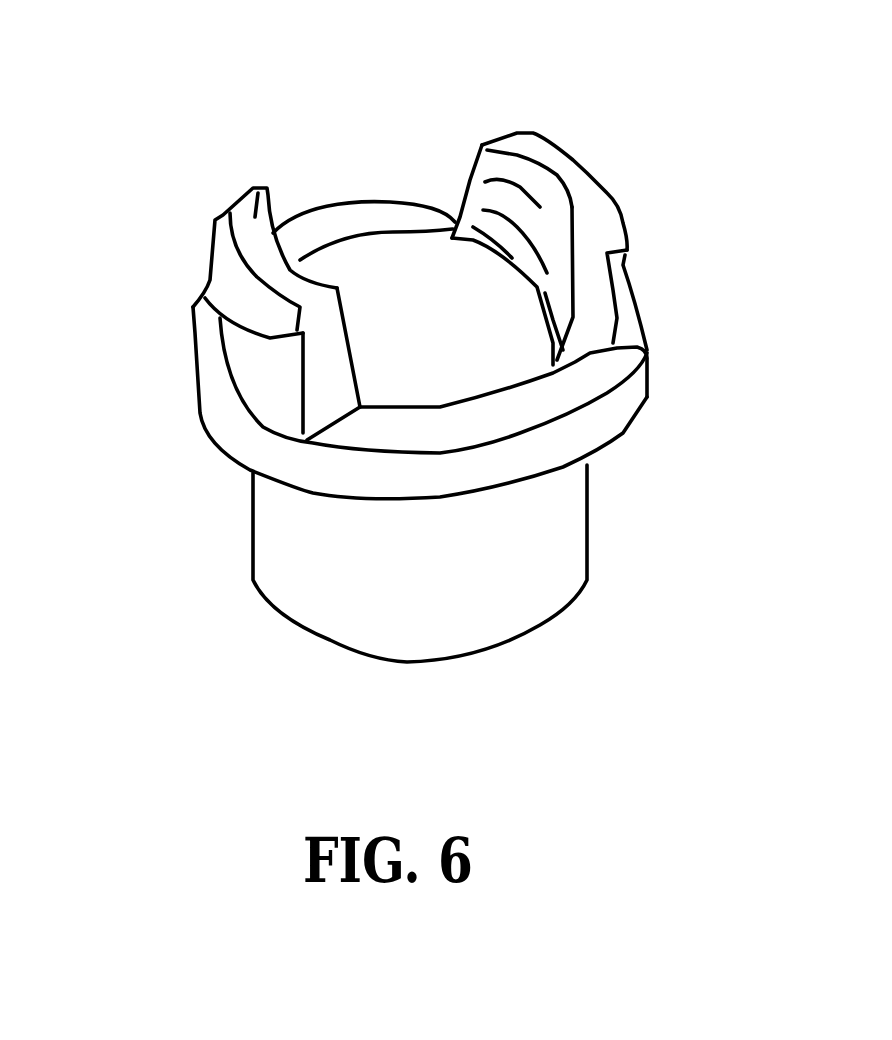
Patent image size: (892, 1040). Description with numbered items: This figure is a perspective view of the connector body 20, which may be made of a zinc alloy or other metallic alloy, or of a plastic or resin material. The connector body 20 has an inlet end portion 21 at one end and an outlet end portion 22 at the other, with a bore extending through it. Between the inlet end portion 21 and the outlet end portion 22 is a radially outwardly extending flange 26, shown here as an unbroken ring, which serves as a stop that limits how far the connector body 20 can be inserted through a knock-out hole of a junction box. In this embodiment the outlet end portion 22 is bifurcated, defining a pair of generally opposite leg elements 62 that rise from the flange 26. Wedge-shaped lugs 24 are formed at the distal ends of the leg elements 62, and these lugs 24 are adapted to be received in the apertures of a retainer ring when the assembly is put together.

The connector body 20 is at (387, 85).
The inlet end portion 21 is at (587, 575).
The outlet end portion 22 is at (603, 196).
The wedge-shaped lugs 24 is at (213, 257).
The flange 26 is at (620, 403).
The leg elements 62 is at (517, 240).